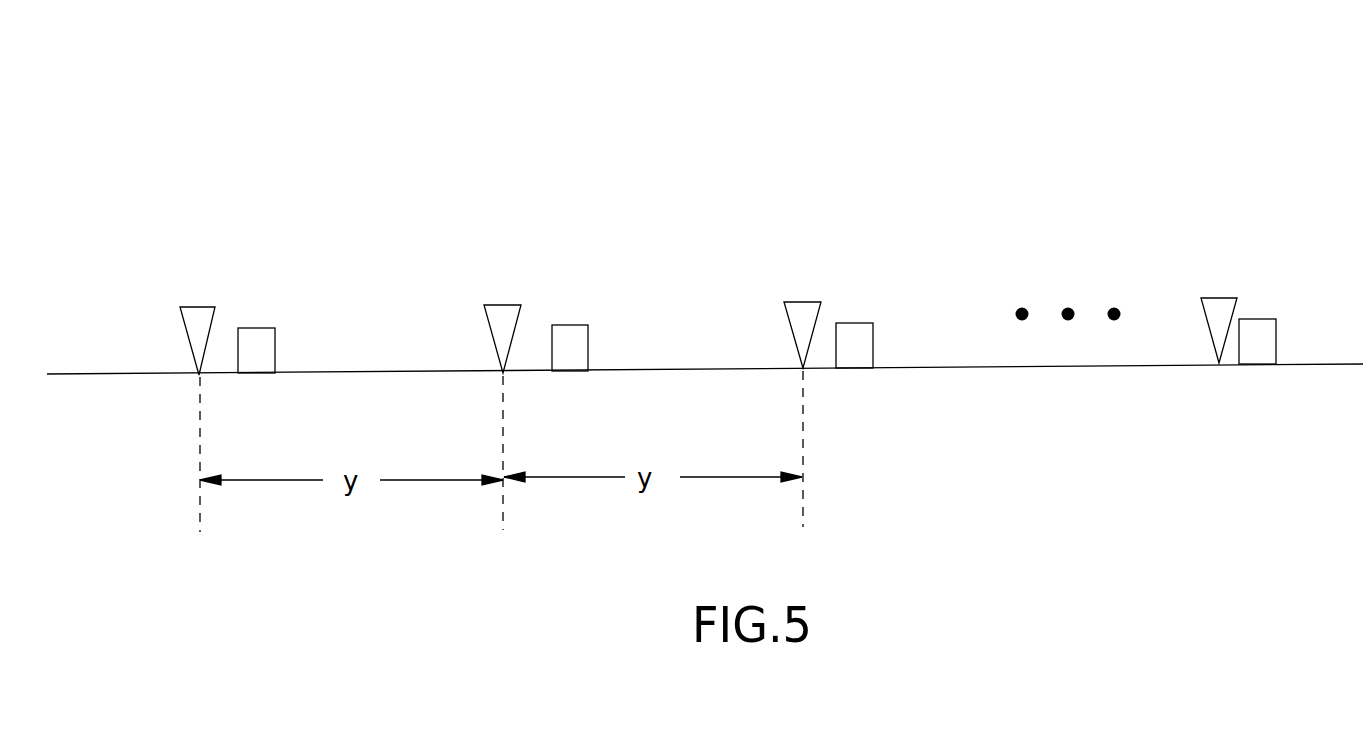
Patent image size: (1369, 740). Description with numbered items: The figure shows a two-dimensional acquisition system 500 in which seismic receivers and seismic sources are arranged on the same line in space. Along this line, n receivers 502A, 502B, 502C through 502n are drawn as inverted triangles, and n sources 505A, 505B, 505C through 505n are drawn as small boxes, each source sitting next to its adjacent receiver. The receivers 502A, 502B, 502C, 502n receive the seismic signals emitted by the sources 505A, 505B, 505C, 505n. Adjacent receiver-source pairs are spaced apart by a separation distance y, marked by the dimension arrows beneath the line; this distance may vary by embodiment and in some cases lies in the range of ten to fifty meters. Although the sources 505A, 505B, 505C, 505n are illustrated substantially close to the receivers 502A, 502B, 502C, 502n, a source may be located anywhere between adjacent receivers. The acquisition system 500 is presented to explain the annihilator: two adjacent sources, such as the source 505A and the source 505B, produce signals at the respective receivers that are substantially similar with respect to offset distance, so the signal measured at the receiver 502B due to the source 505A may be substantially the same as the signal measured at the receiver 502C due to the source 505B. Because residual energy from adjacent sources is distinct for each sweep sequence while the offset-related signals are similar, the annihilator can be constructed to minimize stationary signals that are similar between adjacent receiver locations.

The two-dimensional acquisition system 500 is at (175, 178).
The receiver 502A is at (200, 307).
The receiver 502B is at (507, 303).
The receiver 502C is at (803, 300).
The receiver 502n is at (1217, 298).
The source 505A is at (275, 343).
The source 505B is at (588, 342).
The source 505C is at (873, 338).
The source 505n is at (1276, 335).